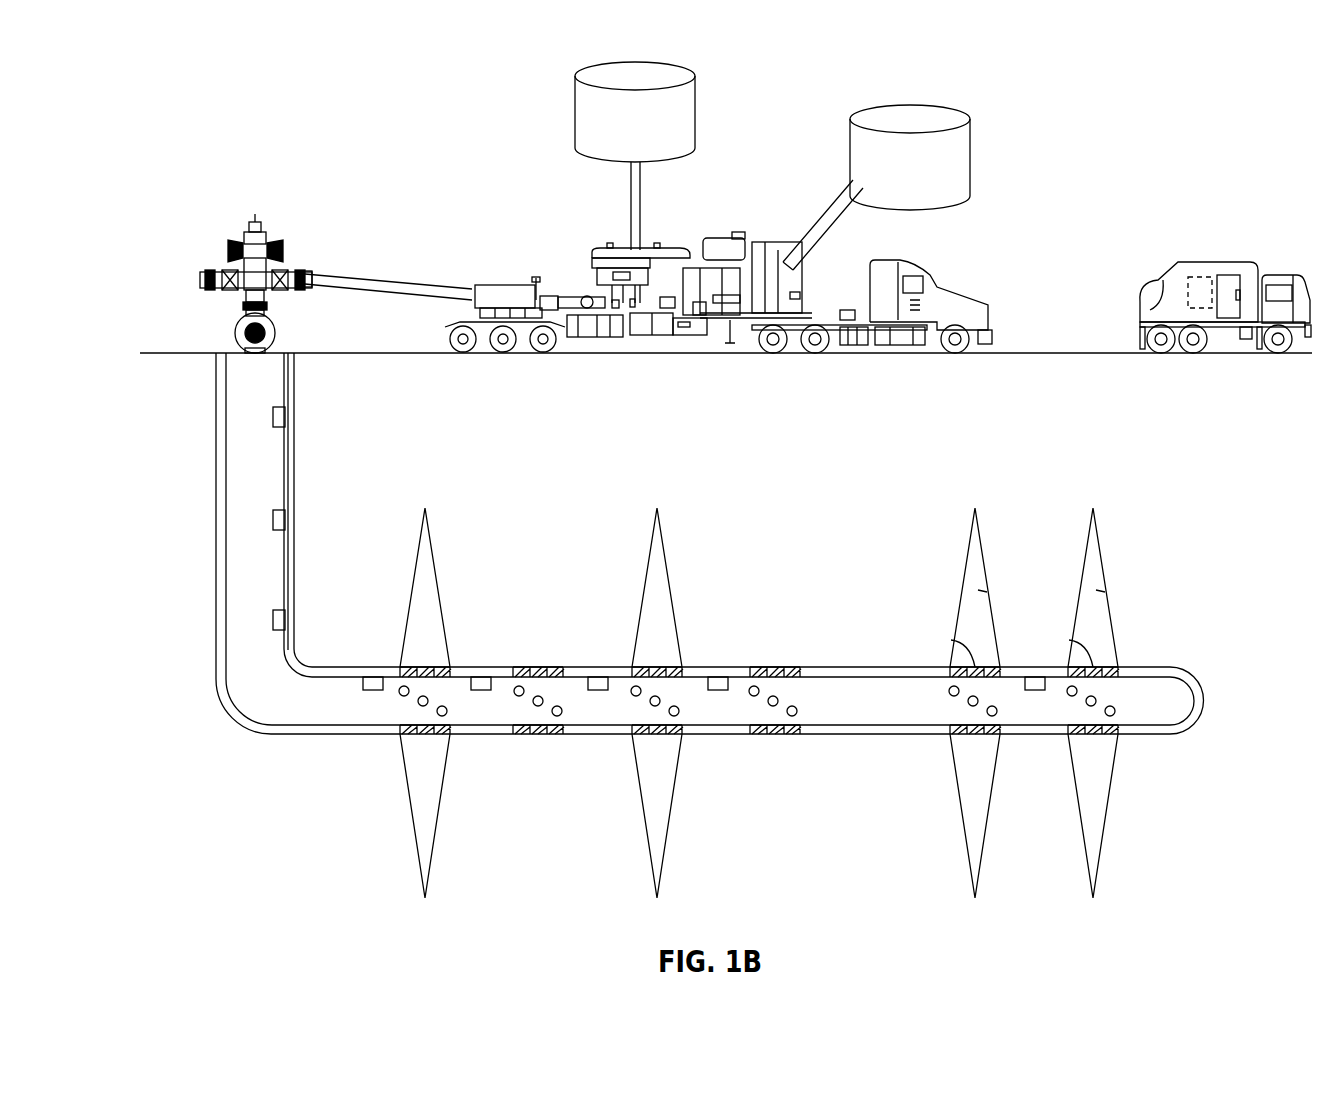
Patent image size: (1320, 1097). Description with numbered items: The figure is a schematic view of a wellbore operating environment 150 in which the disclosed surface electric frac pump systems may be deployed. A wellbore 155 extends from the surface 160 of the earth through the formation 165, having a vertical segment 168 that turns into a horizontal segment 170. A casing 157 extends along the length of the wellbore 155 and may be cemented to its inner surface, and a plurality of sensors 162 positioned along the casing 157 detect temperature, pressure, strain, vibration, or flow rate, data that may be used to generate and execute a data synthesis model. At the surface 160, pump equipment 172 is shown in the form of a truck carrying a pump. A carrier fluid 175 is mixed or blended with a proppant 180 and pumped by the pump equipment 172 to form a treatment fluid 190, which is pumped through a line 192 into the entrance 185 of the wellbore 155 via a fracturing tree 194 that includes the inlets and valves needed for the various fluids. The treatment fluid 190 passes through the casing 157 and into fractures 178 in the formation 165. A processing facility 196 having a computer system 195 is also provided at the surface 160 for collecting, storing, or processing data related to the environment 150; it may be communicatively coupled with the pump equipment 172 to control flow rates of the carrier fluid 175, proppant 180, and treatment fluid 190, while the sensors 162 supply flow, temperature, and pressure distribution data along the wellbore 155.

The wellbore operating environment 150 is at (104, 84).
The wellbore 155 is at (232, 415).
The casing 157 is at (290, 460).
The surface 160 is at (148, 352).
The sensors 162 is at (283, 416).
The formation 165 is at (530, 458).
The vertical segment 168 is at (208, 508).
The horizontal segment 170 is at (288, 748).
The pump equipment 172 is at (950, 284).
The carrier fluid 175 is at (971, 148).
The fractures 178 is at (426, 506).
The proppant 180 is at (697, 103).
The entrance 185 is at (235, 352).
The treatment fluid 190 is at (393, 282).
The line 192 is at (333, 268).
The fracturing tree 194 is at (254, 220).
The computer system 195 is at (1200, 268).
The processing facility 196 is at (1235, 270).